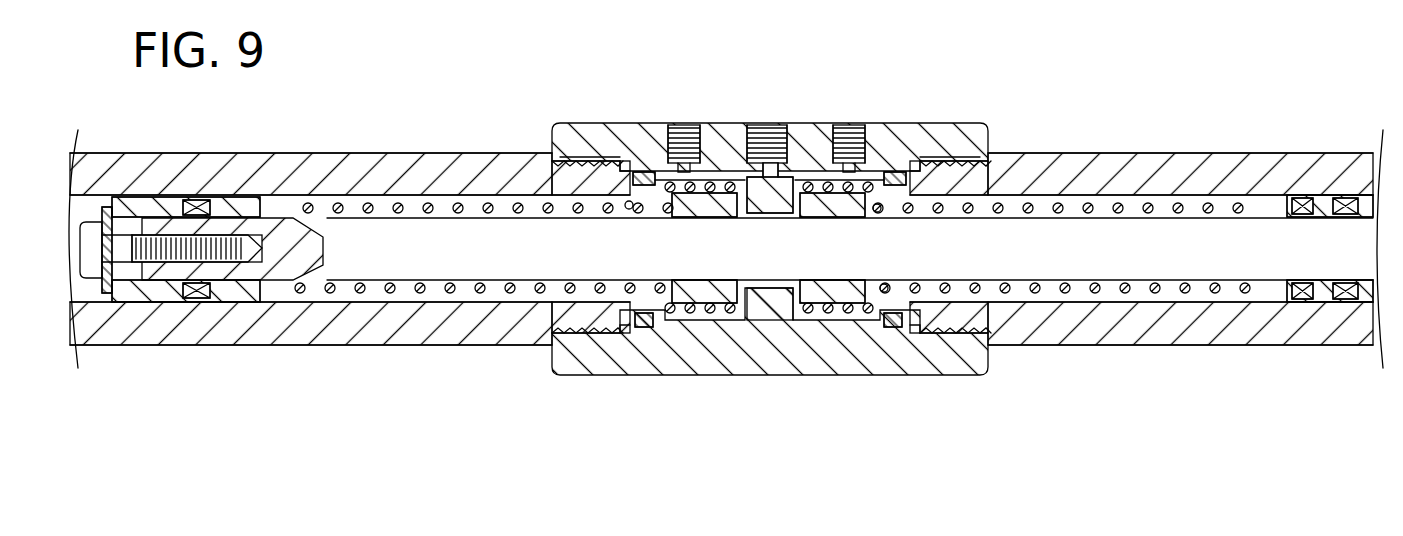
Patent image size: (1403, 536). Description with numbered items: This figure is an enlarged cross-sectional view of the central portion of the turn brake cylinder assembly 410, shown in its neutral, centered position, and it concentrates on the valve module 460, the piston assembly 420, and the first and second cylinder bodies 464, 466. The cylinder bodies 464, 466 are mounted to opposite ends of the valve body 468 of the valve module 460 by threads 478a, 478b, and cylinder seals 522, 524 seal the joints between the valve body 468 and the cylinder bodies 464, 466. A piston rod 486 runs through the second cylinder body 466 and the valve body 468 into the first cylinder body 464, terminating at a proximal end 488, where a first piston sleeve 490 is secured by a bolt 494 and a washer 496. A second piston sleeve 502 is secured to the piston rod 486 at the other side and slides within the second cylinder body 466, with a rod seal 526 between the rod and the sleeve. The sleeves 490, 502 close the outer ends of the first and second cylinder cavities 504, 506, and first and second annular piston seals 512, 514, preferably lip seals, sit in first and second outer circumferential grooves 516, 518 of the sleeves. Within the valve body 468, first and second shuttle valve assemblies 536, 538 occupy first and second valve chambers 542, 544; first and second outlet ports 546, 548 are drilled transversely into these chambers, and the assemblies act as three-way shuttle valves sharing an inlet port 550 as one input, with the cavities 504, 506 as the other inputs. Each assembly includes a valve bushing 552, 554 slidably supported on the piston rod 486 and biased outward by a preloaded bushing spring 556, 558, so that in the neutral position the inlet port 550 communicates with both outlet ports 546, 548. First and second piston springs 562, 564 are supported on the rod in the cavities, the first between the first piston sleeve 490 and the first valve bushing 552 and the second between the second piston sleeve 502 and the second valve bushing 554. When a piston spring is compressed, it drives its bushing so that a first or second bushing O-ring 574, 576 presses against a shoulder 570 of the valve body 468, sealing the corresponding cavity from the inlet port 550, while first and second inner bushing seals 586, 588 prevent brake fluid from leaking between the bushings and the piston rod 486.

The turn brake cylinder assembly 410 is at (1140, 82).
The piston assembly 420 is at (358, 298).
The valve module 460 is at (928, 112).
The first cylinder body 464 is at (428, 158).
The second cylinder body 466 is at (1195, 158).
The valve body 468 is at (992, 362).
The threads 478a is at (606, 162).
The threads 478b is at (958, 160).
The piston rod 486 is at (1198, 262).
The proximal end 488 is at (152, 268).
The first piston sleeve 490 is at (156, 204).
The bolt 494 is at (92, 228).
The washer 496 is at (106, 212).
The second piston sleeve 502 is at (1318, 200).
The first cylinder cavity 504 is at (430, 296).
The second cylinder cavity 506 is at (1142, 298).
The first annular piston seal 512 is at (195, 300).
The second annular piston seal 514 is at (1348, 300).
The first outer circumferential groove 516 is at (198, 200).
The second outer circumferential groove 518 is at (1346, 200).
The cylinder seal 522 is at (646, 328).
The cylinder seal 524 is at (903, 328).
The rod seal 526 is at (1302, 300).
The first shuttle valve assembly 536 is at (697, 326).
The second shuttle valve assembly 538 is at (836, 326).
The first valve chamber 542 is at (728, 160).
The second valve chamber 544 is at (812, 180).
The first outlet port 546 is at (672, 160).
The second outlet port 548 is at (858, 130).
The inlet port 550 is at (773, 125).
The first valve bushing 552 is at (672, 318).
The second valve bushing 554 is at (868, 318).
The first bushing spring 556 is at (713, 318).
The second bushing spring 558 is at (818, 318).
The first piston spring 562 is at (474, 294).
The second piston spring 564 is at (1050, 296).
The shoulder 570 is at (770, 215).
The first bushing O-ring 574 is at (700, 217).
The second bushing O-ring 576 is at (812, 217).
The first inner bushing seal 586 is at (700, 205).
The second inner bushing seal 588 is at (870, 290).